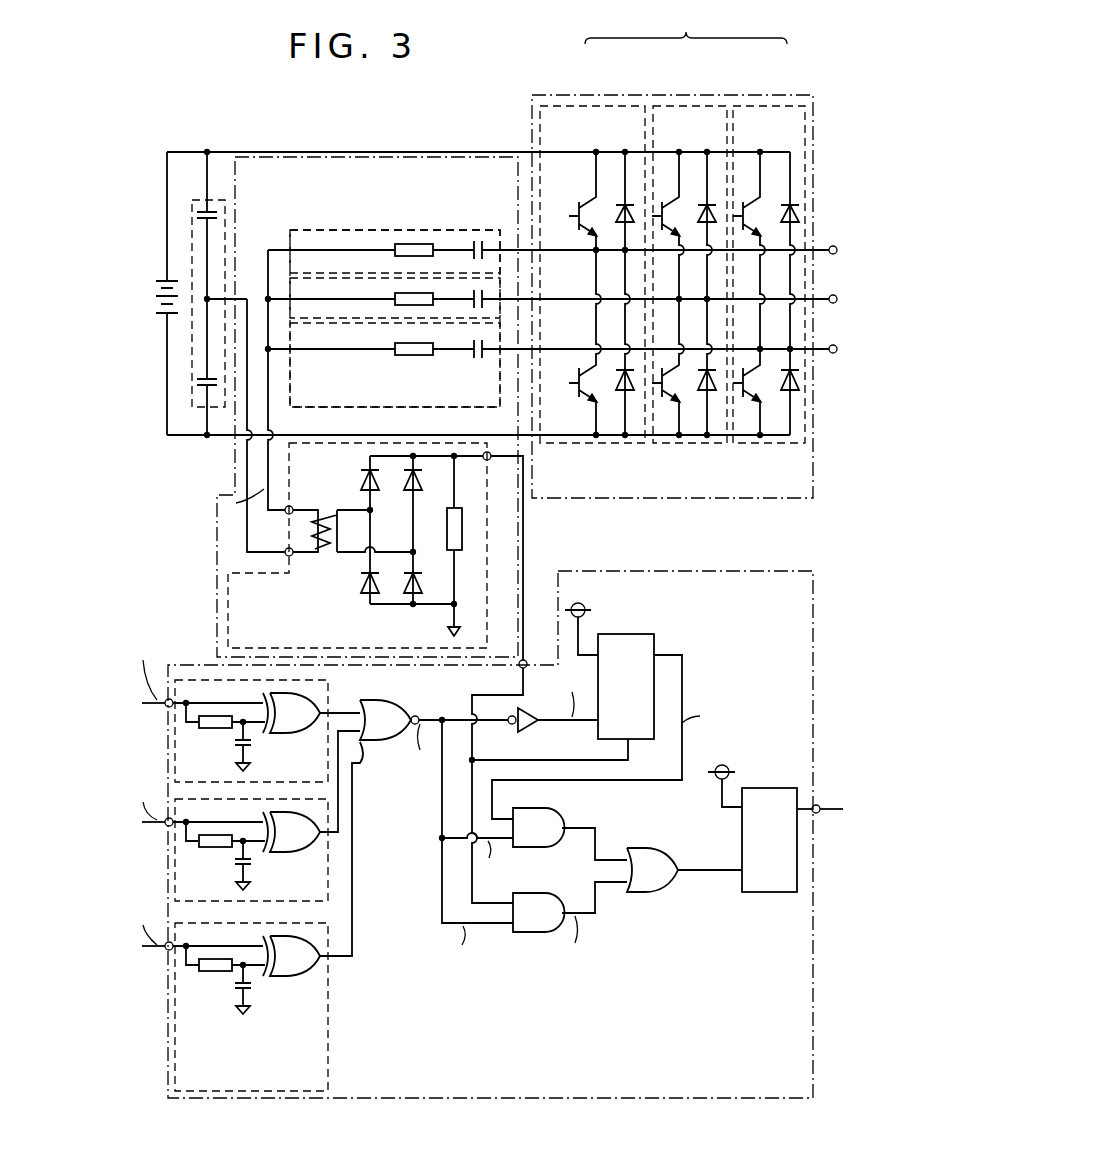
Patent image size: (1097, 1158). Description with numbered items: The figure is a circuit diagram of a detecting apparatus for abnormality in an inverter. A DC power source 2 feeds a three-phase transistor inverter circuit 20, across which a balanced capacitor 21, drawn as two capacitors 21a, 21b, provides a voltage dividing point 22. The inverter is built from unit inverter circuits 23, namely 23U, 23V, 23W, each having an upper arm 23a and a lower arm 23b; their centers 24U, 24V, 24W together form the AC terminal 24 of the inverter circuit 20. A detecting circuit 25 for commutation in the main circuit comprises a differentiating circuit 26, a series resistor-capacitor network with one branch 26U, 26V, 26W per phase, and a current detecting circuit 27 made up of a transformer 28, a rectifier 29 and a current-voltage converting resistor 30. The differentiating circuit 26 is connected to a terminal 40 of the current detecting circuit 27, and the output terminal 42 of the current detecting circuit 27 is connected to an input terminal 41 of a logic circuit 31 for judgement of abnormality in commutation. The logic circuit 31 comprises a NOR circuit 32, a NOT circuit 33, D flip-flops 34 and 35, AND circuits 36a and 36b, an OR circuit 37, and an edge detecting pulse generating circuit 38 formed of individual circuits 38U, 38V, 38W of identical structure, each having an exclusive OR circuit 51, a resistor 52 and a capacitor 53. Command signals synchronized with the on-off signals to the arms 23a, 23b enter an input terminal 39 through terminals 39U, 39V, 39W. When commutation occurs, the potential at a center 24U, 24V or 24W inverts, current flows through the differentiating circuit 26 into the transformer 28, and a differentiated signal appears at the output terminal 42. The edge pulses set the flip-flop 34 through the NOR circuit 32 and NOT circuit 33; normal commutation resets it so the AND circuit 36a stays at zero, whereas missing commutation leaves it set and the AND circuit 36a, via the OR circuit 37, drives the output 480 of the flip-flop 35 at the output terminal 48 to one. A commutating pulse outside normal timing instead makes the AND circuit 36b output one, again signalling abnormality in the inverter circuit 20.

The DC power source 2 is at (165, 278).
The three-phase transistor inverter circuit 20 is at (796, 506).
The balanced capacitor 21 is at (177, 293).
The capacitor 21a is at (200, 210).
The capacitor 21b is at (197, 383).
The voltage dividing point 22 is at (205, 301).
The unit inverters 23 is at (672, 226).
The unit inverter circuit 23U is at (608, 104).
The unit inverter circuit 23V is at (690, 104).
The unit inverter circuit 23W is at (770, 104).
The upper arm 23a is at (575, 214).
The lower arm 23b is at (579, 390).
The AC terminal 24 is at (842, 289).
The center of unit inverter circuit 24U is at (833, 254).
The center of unit inverter circuit 24V is at (833, 303).
The center of unit inverter circuit 24W is at (833, 353).
The detecting circuit for commutation in the main circuit 25 is at (217, 535).
The differentiating circuit 26 is at (354, 412).
The U phase differentiating circuit 26U is at (290, 252).
The V phase differentiating circuit 26V is at (290, 292).
The W phase differentiating circuit 26W is at (485, 407).
The current detecting circuit 27 is at (228, 600).
The transformer 28 is at (328, 515).
The rectifier 29 is at (362, 580).
The current-voltage converting resistor 30 is at (447, 536).
The logic circuit for judgement of abnormality in commutation 31 is at (622, 571).
The NOR circuit 32 is at (400, 704).
The NOT circuit 33 is at (530, 713).
The D flip-flop 34 is at (640, 633).
The D flip-flop 35 is at (757, 788).
The AND circuit 36a is at (557, 812).
The AND circuit 36b is at (547, 893).
The OR circuit 37 is at (663, 853).
The edge detecting pulse generating circuit 38 is at (335, 939).
The edge detecting pulse generating circuit 38U is at (335, 688).
The edge detecting pulse generating circuit 38V is at (330, 885).
The edge detecting pulse generating circuit 38W is at (330, 1020).
The input terminal 39 is at (146, 885).
The terminal 39U is at (165, 707).
The terminal 39V is at (165, 826).
The terminal 39W is at (146, 964).
The terminal of the current detecting circuit 40 is at (286, 514).
The input terminal of the logic circuit 41 is at (524, 658).
The output terminal of the current detecting circuit 42 is at (485, 460).
The output terminal of the logic circuit 48 is at (820, 805).
The output of the D flip-flop 480 is at (838, 815).
The exclusive OR circuit 51 is at (300, 734).
The resistor 52 is at (205, 729).
The capacitor 53 is at (253, 742).